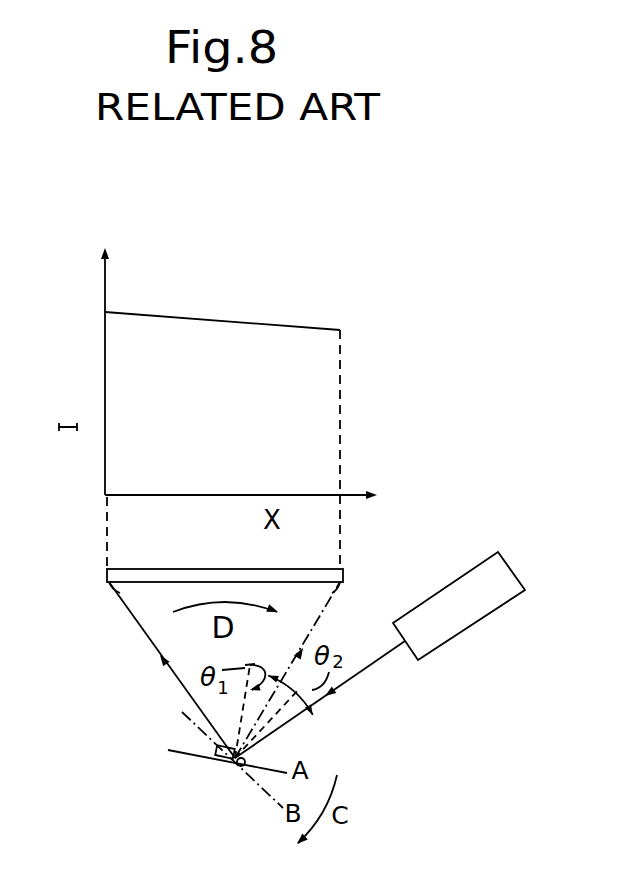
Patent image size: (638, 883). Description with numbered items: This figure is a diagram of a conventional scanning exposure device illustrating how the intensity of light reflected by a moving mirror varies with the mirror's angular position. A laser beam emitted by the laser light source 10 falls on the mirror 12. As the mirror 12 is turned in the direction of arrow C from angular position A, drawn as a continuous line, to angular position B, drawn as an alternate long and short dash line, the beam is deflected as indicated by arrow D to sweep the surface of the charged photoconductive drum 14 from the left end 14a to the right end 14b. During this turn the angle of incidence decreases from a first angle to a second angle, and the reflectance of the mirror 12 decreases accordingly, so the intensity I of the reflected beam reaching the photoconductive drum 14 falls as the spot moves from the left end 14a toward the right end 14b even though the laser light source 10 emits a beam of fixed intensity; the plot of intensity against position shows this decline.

The laser light source 10 is at (473, 621).
The mirror 12 is at (178, 750).
The photoconductive drum 14 is at (107, 571).
The left end 14a is at (126, 583).
The right end 14b is at (337, 588).